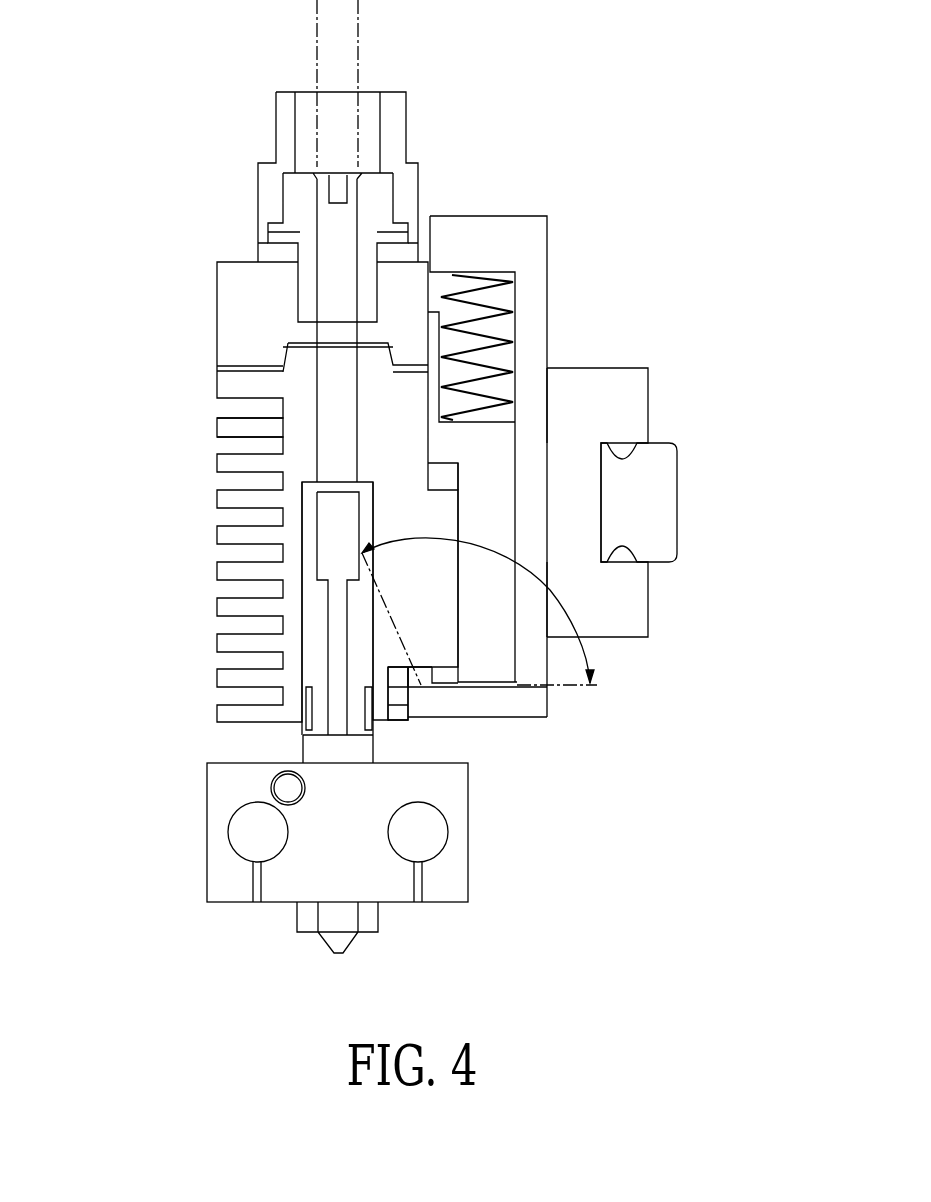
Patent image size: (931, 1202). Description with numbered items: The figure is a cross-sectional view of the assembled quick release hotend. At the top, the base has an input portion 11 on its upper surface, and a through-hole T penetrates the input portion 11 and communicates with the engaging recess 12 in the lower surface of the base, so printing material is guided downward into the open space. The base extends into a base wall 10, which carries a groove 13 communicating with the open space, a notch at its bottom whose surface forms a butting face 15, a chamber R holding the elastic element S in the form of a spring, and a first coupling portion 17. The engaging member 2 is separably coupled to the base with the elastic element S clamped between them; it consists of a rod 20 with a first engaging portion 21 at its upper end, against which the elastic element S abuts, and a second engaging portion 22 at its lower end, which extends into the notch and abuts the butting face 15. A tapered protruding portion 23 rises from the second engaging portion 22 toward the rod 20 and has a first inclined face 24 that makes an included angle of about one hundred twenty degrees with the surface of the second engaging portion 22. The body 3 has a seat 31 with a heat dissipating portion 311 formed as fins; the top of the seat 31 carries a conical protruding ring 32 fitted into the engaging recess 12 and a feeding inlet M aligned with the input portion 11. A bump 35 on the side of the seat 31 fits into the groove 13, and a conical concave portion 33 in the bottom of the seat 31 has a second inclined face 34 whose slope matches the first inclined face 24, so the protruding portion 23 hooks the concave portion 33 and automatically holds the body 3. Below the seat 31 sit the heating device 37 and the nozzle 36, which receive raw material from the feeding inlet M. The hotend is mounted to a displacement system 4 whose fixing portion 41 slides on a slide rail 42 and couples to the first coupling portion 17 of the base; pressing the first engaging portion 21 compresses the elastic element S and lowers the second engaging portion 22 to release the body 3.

The engaging member 2 is at (570, 482).
The body 3 is at (259, 496).
The displacement system 4 is at (677, 502).
The base wall 10 is at (497, 612).
The input portion 11 is at (280, 132).
The engaging recess 12 is at (274, 327).
The groove 13 is at (448, 505).
The butting face 15 is at (490, 687).
The first coupling portion 17 is at (677, 582).
The rod 20 is at (547, 482).
The first engaging portion 21 is at (505, 225).
The second engaging portion 22 is at (530, 709).
The protruding portion 23 is at (395, 645).
The first inclined face 24 is at (489, 758).
The seat 31 is at (279, 496).
The heat dissipating portion 311 is at (222, 426).
The protruding ring 32 is at (293, 357).
The concave portion 33 is at (400, 690).
The second inclined face 34 is at (433, 682).
The bump 35 is at (590, 412).
The nozzle 36 is at (345, 938).
The heating device 37 is at (218, 828).
The fixing portion 41 is at (648, 410).
The slide rail 42 is at (662, 502).
The through-hole T is at (372, 100).
The elastic element S is at (542, 337).
The chamber R is at (535, 332).
The feeding inlet M is at (332, 353).